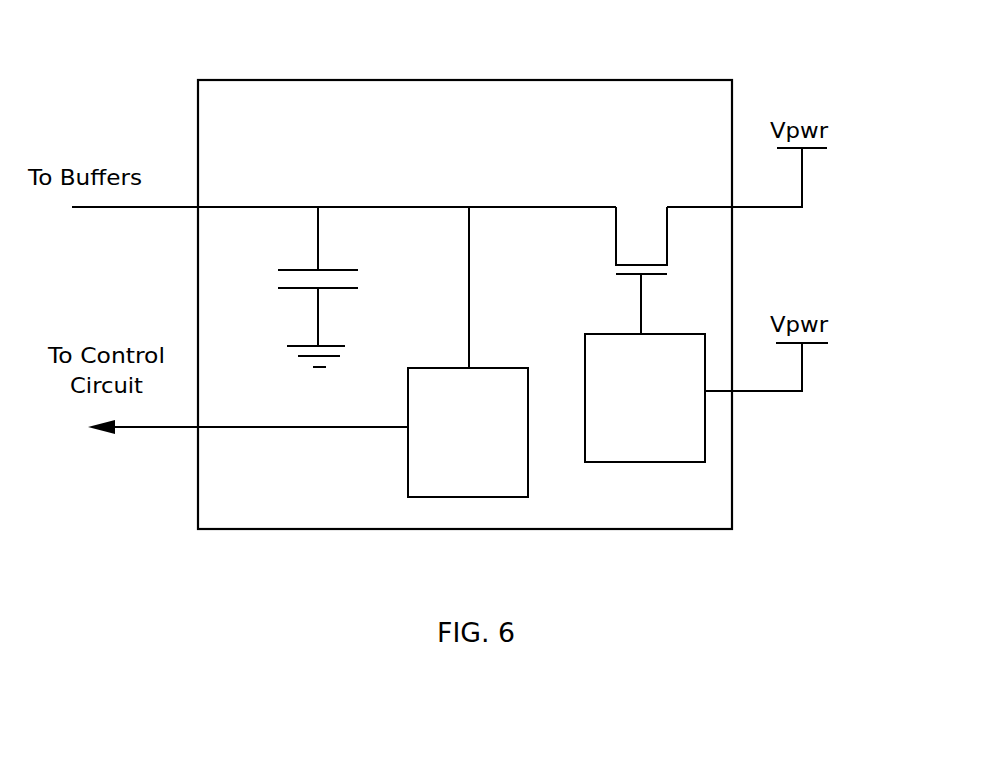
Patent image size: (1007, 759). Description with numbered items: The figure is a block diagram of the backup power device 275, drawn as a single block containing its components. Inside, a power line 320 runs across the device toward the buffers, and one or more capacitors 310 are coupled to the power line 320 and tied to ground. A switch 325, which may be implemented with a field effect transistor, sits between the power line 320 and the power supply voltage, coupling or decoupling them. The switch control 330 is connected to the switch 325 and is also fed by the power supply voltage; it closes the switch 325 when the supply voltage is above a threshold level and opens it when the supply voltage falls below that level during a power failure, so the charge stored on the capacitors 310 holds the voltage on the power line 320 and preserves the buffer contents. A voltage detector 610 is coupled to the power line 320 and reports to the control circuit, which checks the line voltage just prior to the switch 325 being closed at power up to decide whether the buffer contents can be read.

The backup power device 275 is at (560, 78).
The power line 320 is at (362, 207).
The capacitor 310 is at (342, 265).
The switch 325 is at (667, 239).
The switch control 330 is at (613, 333).
The voltage detector 610 is at (483, 363).